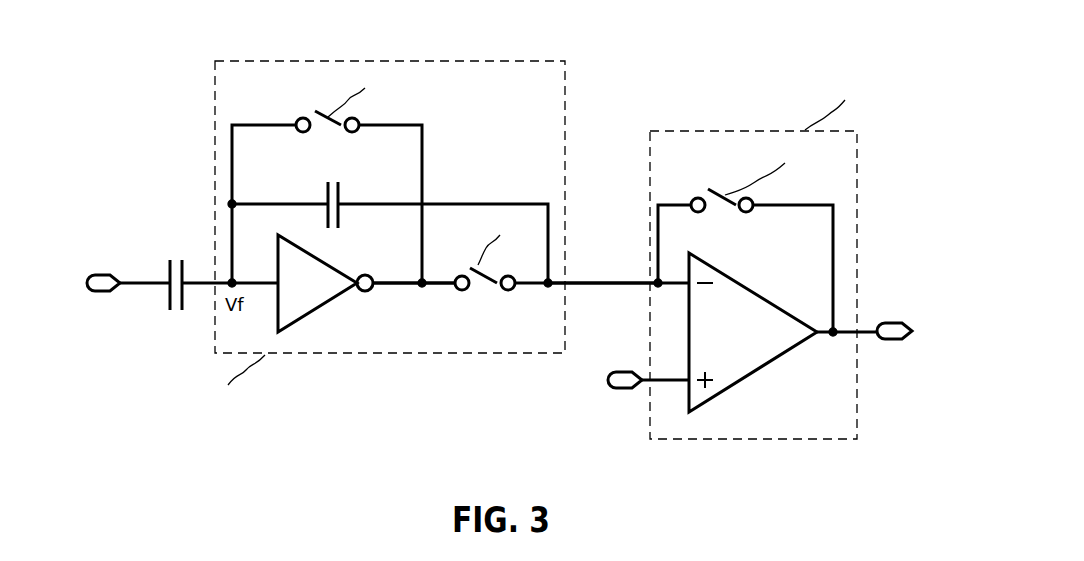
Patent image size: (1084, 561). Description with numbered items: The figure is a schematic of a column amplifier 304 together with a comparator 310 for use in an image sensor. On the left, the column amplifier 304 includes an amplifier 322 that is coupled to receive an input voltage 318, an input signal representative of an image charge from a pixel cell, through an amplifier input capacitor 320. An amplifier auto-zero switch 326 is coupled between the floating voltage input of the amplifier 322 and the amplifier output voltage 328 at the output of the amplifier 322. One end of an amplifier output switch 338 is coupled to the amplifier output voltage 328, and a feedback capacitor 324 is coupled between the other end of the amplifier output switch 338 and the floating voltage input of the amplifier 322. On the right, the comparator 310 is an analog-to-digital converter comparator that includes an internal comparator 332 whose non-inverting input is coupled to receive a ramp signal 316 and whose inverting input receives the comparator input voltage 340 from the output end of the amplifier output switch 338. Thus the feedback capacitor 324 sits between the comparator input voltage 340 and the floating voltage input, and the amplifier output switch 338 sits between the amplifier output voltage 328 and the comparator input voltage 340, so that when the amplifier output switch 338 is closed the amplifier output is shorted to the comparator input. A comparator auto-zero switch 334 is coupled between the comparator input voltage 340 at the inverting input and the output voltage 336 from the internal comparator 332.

The column amplifier 304 is at (320, 355).
The comparator 310 is at (738, 132).
The ramp signal 316 is at (590, 395).
The input voltage Vin 318 is at (87, 270).
The amplifier input capacitor Cinamp 320 is at (178, 258).
The amplifier 322 is at (335, 306).
The feedback capacitor Cfb 324 is at (343, 228).
The amplifier auto-zero switch 326 is at (323, 130).
The Vamp voltage 328 is at (405, 312).
The internal comparator 332 is at (773, 372).
The comparator auto-zero switch 334 is at (740, 215).
The Vout voltage 336 is at (920, 325).
The amplifier output switch 338 is at (488, 293).
The Vincmp voltage 340 is at (610, 315).